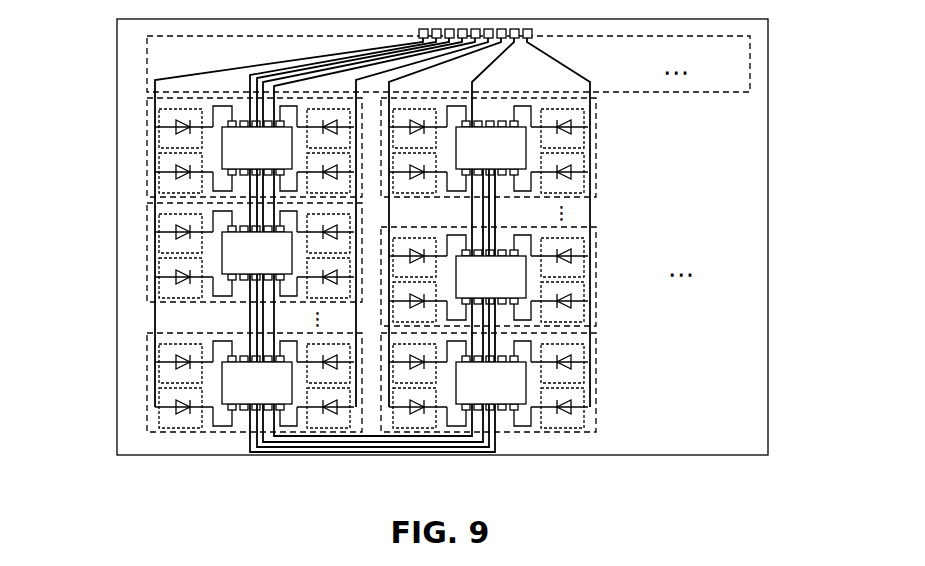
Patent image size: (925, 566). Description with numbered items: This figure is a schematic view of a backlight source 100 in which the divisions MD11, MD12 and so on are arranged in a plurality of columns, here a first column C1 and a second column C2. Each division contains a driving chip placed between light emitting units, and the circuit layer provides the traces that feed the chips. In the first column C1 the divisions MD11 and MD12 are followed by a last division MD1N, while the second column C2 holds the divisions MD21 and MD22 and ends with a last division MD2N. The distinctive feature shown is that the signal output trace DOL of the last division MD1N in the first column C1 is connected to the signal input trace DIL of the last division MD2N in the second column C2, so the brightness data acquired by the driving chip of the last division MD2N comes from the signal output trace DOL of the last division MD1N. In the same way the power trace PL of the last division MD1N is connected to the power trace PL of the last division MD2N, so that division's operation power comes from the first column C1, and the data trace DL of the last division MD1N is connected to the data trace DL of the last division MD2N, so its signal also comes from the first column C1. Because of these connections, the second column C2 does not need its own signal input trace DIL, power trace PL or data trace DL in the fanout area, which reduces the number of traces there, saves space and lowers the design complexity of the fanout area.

The backlight source 100 is at (96, 47).
The division MD11 is at (147, 141).
The division MD12 is at (147, 234).
The last division in first column MD1N is at (147, 379).
The division MD21 is at (598, 160).
The division MD22 is at (598, 253).
The last division in second column MD2N is at (598, 390).
The first column C1 is at (55, 120).
The second column C2 is at (828, 140).
The signal output trace DOL is at (249, 437).
The power trace PL is at (299, 449).
The data trace DL is at (344, 440).
The signal input trace DIL is at (497, 440).